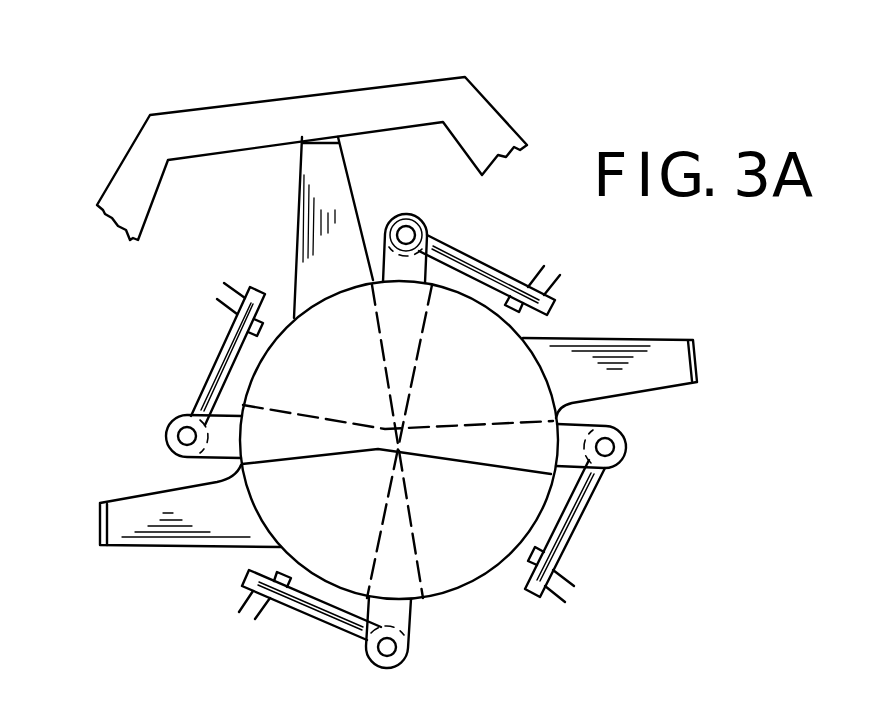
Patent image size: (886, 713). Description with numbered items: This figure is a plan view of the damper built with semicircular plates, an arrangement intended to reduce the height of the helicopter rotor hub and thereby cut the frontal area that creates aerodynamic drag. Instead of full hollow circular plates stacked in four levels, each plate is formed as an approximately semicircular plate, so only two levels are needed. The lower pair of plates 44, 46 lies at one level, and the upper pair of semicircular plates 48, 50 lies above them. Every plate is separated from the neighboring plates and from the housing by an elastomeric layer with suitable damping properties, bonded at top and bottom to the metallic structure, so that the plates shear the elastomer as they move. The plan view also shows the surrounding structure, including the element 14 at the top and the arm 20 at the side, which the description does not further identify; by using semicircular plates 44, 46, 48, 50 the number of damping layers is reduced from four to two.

The hanger bracket 14 is at (378, 85).
The arm 20 is at (592, 500).
The semicircular plate 44 is at (460, 560).
The semicircular plate 46 is at (348, 305).
The semicircular plate 48 is at (413, 307).
The semicircular plate 50 is at (373, 573).